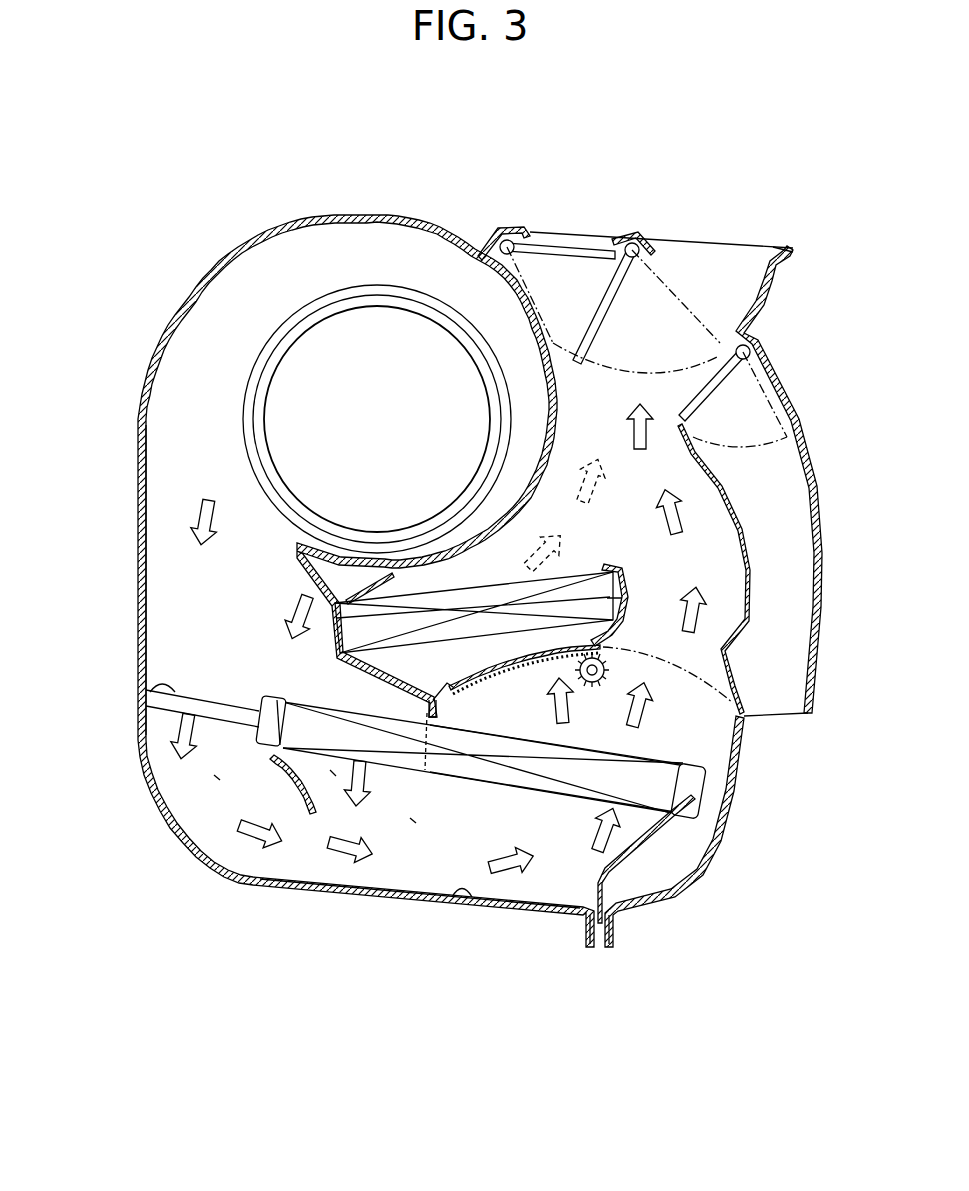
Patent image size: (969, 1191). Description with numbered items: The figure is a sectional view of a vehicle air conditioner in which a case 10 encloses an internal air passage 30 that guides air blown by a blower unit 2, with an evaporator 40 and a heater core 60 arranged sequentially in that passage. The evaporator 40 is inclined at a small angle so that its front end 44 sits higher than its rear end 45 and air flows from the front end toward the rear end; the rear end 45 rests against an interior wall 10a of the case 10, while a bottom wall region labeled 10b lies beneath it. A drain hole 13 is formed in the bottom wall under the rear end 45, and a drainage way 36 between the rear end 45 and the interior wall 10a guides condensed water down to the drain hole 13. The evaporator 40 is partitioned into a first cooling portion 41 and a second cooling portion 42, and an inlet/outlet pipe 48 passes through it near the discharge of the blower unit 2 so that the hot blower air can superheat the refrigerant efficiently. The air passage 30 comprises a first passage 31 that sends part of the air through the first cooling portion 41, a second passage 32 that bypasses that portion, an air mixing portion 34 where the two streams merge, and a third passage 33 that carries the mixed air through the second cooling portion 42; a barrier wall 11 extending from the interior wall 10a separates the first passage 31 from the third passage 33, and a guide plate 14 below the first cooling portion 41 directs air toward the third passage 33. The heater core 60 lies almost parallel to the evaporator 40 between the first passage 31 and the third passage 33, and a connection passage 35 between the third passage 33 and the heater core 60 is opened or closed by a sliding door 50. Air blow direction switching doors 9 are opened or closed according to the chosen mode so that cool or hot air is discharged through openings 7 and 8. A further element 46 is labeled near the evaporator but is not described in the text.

The blower unit 2 is at (287, 293).
The opening 7 is at (723, 245).
The opening 8 is at (550, 235).
The air blow direction switching door 9 is at (607, 287).
The case 10 is at (122, 520).
The interior wall of the case 10a is at (148, 607).
The bottom wall of case 10b is at (458, 900).
The barrier wall 11 is at (427, 702).
The drain hole 13 is at (597, 950).
The guide plate 14 is at (300, 803).
The internal air passage 30 is at (427, 868).
The first passage 31 is at (333, 773).
The second passage 32 is at (217, 777).
The third passage 33 is at (627, 733).
The air mixing portion 34 is at (413, 820).
The connection passage 35 is at (477, 653).
The drainage way 36 is at (733, 763).
The evaporator 40 is at (460, 735).
The first cooling portion 41 is at (337, 743).
The second cooling portion 42 is at (619, 792).
The front end of the evaporator 44 is at (258, 703).
The rear end of the evaporator 45 is at (697, 760).
The seal 46 is at (277, 700).
The inlet/outlet pipe 48 is at (140, 688).
The sliding door 50 is at (513, 663).
The heater core 60 is at (607, 600).